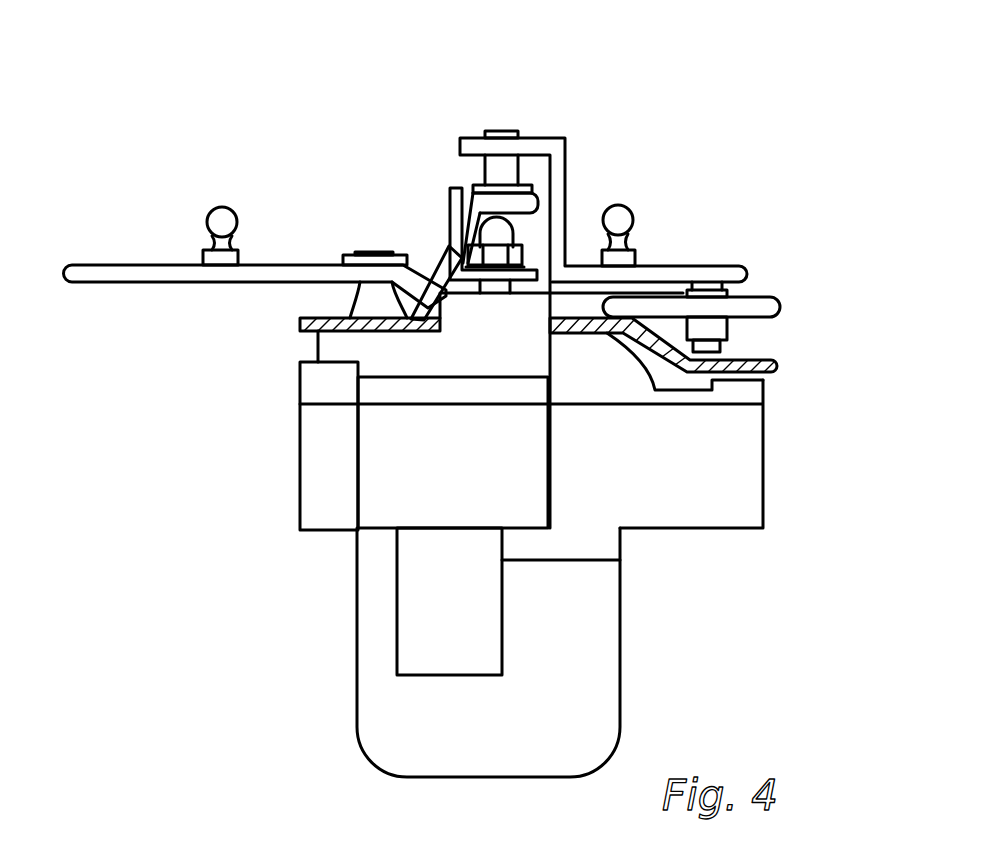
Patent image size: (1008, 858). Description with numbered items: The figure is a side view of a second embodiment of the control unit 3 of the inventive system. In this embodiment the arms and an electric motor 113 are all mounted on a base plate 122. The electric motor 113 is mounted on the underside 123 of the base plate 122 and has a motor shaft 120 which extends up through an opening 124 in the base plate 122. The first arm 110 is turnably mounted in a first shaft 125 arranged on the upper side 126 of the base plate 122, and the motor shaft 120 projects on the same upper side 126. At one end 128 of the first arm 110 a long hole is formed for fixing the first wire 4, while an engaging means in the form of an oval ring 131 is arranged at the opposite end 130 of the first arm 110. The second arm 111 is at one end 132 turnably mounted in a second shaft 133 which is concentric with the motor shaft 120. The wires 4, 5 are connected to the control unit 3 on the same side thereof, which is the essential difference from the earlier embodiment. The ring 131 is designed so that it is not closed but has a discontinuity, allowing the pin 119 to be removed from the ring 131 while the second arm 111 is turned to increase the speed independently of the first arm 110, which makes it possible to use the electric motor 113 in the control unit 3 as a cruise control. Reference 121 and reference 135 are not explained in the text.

The control unit 3 is at (584, 555).
The first wire 4 is at (222, 218).
The second wire 5 is at (620, 219).
The first arm 110 is at (117, 267).
The second arm 111 is at (665, 275).
The electric motor 113 is at (622, 640).
The pin 119 is at (718, 330).
The motor shaft 120 is at (497, 235).
The contact spring 121 is at (458, 224).
The base plate 122 is at (300, 323).
The underside 123 is at (687, 367).
The opening 124 is at (443, 325).
The first shaft 125 is at (370, 297).
The upper side 126 is at (767, 353).
The end of the first arm 128 is at (248, 260).
The opposite end of the arm 130 is at (753, 300).
The oval ring 131 is at (783, 304).
The end of the second arm 132 is at (522, 270).
The second shaft 133 is at (520, 157).
The second terminal assembly 135 is at (711, 228).